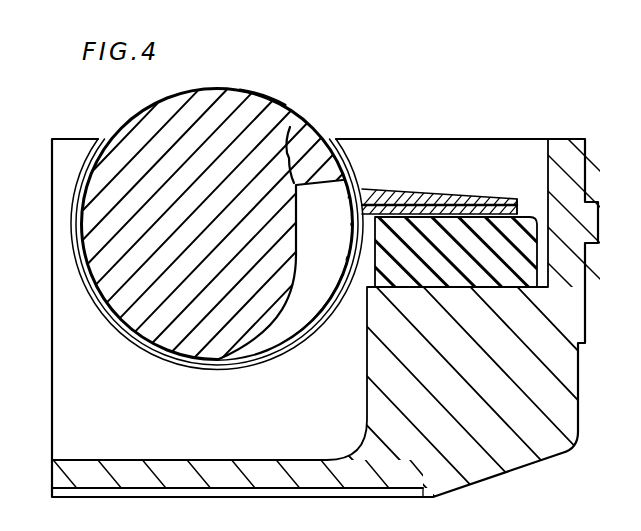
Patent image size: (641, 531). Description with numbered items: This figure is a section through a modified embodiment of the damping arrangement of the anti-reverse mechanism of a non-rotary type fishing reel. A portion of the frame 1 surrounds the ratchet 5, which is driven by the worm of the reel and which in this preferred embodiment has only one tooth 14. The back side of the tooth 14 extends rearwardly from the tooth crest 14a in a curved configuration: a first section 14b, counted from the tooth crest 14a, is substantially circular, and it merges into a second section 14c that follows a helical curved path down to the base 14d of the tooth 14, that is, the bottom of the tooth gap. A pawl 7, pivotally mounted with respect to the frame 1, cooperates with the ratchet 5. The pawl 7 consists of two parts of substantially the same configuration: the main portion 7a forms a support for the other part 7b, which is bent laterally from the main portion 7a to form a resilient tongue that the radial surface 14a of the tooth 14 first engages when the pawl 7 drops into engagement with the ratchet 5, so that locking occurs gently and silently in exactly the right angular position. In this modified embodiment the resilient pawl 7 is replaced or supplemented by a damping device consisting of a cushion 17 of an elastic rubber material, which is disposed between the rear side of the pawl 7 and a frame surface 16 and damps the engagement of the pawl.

The frame 1 is at (567, 451).
The ratchet 5 is at (156, 103).
The pawl 7 is at (442, 187).
The main portion 7a is at (413, 205).
The resilient tongue 7b is at (377, 191).
The tooth 14 is at (294, 210).
The tooth crest 14a is at (329, 187).
The first section 14b is at (263, 96).
The second section 14c is at (297, 258).
The base 14d is at (291, 128).
The frame surface 16 is at (488, 289).
The cushion 17 is at (514, 196).